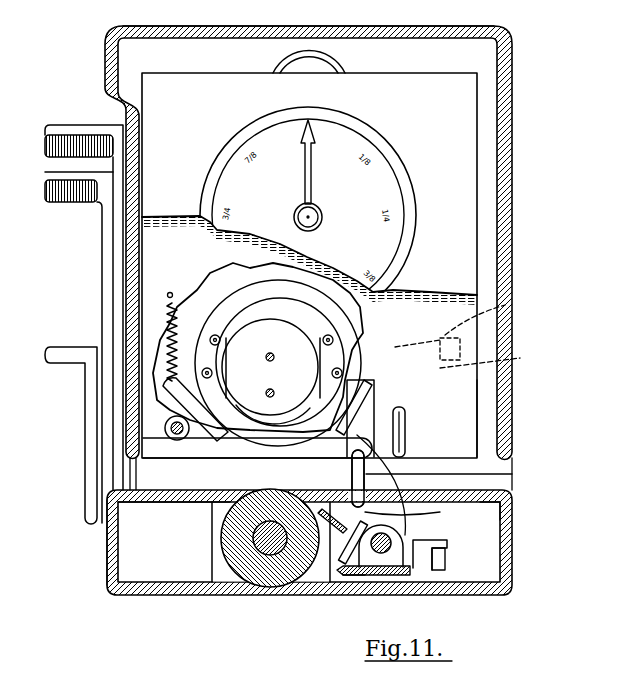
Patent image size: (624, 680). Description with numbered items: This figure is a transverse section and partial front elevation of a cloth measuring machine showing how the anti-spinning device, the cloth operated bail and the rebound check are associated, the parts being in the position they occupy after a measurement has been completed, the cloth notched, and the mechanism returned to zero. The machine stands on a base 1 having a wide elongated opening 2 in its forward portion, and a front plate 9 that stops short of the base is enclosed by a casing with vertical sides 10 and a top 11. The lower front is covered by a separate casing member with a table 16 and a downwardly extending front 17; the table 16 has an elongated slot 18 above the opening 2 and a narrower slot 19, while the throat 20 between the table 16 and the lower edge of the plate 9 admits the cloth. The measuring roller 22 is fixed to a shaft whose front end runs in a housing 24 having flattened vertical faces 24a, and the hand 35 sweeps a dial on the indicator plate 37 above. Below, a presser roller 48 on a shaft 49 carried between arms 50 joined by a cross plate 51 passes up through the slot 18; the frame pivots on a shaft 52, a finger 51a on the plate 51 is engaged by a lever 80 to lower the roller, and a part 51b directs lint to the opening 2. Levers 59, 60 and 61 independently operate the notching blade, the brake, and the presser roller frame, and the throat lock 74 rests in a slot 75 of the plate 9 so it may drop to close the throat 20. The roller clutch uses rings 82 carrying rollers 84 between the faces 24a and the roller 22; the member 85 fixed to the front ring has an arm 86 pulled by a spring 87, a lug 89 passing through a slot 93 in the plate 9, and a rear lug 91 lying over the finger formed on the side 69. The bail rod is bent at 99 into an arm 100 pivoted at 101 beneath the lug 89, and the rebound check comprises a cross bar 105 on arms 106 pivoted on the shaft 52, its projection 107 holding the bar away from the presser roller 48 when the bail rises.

The base 1 is at (360, 560).
The elongated opening 2 is at (303, 588).
The front plate 9 is at (467, 405).
The casing sides 10 is at (512, 226).
The casing top 11 is at (335, 31).
The table 16 is at (200, 494).
The front of lower casing 17 is at (512, 550).
The elongated slot 18 is at (232, 498).
The narrow slot 19 is at (370, 478).
The throat 20 is at (512, 474).
The measuring roller 22 is at (220, 297).
The roller bearing housing 24 is at (302, 357).
The vertical faces 24a is at (318, 349).
The hand 35 is at (313, 170).
The indicator plate 37 is at (466, 176).
The presser roller 48 is at (272, 582).
The presser roller shaft 49 is at (257, 548).
The arms 50 is at (347, 568).
The cross plate 51 is at (383, 577).
The finger 51a is at (438, 541).
The lint directing part 51b is at (382, 572).
The pivot shaft 52 is at (390, 538).
The notch lever 59 is at (110, 219).
The brake lever 60 is at (120, 277).
The presser roller lever 61 is at (95, 402).
The up-turned side 69 is at (499, 356).
The throat lock 74 is at (398, 426).
The slot 75 is at (403, 443).
The lever 80 is at (443, 568).
The rings 82 is at (313, 320).
The clutch rollers 84 is at (323, 372).
The irregular shaped member 85 is at (322, 413).
The projecting arm 86 is at (190, 400).
The coiled spring 87 is at (165, 345).
The lug 89 is at (374, 413).
The rear lug 91 is at (500, 312).
The slot 93 is at (436, 352).
The inclined portion of bail rod 99 is at (368, 468).
The bail arm 100 is at (222, 444).
The bail pivot 101 is at (175, 440).
The cross bar 105 is at (340, 556).
The rebound check arms 106 is at (515, 507).
The upward projection 107 is at (440, 472).